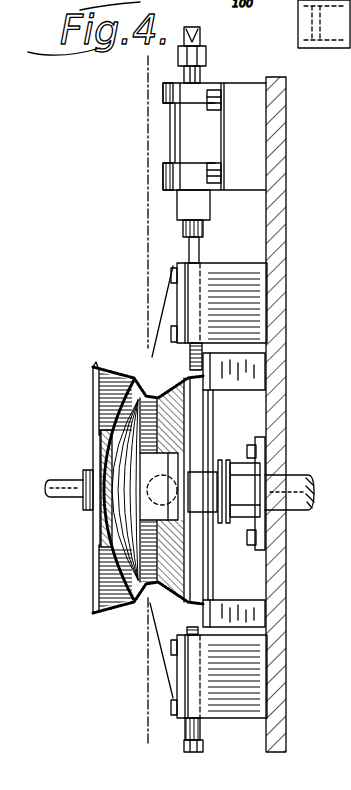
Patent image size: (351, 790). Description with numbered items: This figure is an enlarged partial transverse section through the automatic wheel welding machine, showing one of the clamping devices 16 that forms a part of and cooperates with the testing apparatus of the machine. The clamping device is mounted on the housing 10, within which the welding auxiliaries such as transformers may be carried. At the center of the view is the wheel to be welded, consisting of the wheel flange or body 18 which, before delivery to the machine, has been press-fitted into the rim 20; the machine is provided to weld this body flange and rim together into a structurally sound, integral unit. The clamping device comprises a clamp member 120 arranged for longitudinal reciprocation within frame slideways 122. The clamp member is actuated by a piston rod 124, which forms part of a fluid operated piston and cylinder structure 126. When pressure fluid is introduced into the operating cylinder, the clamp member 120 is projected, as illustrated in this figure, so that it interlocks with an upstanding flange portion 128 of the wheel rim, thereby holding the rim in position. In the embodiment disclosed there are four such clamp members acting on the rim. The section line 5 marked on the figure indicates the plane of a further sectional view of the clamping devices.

The section line 5- 5 is at (170, 73).
The housing 10 is at (277, 604).
The clamp device 16 is at (170, 208).
The wheel flange or body 18 is at (123, 428).
The rim 20 is at (113, 373).
The clamp member 120 is at (192, 352).
The frame slideways 122 is at (237, 272).
The piston rod 124 is at (187, 247).
The piston and cylinder structure 126 is at (177, 140).
The upstanding flange portion 128 is at (240, 373).